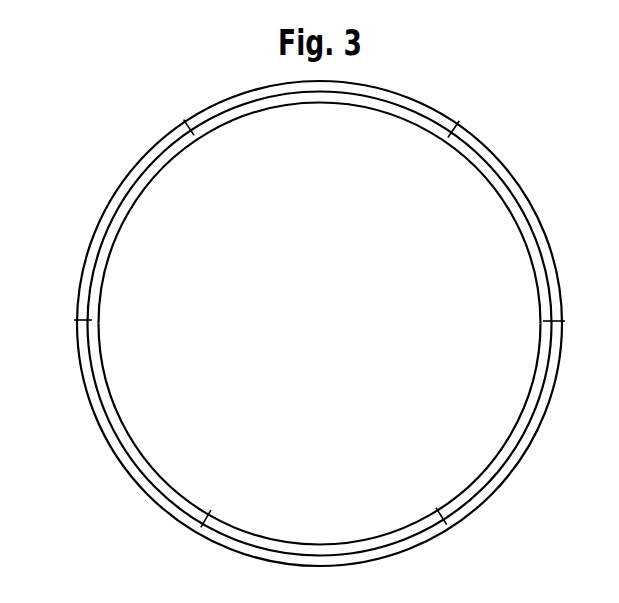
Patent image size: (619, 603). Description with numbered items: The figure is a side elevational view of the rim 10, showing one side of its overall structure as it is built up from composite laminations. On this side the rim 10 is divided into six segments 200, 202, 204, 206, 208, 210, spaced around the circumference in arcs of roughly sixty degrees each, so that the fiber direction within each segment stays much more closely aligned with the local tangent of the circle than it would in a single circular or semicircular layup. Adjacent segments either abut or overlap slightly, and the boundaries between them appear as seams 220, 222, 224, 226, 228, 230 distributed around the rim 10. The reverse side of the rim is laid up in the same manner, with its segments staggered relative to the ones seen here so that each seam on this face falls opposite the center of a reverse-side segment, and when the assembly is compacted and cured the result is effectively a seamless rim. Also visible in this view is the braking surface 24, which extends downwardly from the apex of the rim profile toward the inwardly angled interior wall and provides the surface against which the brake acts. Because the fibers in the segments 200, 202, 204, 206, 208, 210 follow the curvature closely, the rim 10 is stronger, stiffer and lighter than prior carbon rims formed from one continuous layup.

The rim 10 is at (140, 160).
The braking surface 24 is at (423, 107).
The segment 200 is at (130, 207).
The segment 202 is at (283, 105).
The segment 204 is at (507, 205).
The segment 206 is at (502, 447).
The segment 208 is at (355, 542).
The segment 210 is at (147, 460).
The seam 220 is at (75, 320).
The seam 222 is at (187, 123).
The seam 224 is at (448, 138).
The seam 226 is at (563, 321).
The seam 228 is at (445, 523).
The seam 230 is at (205, 521).